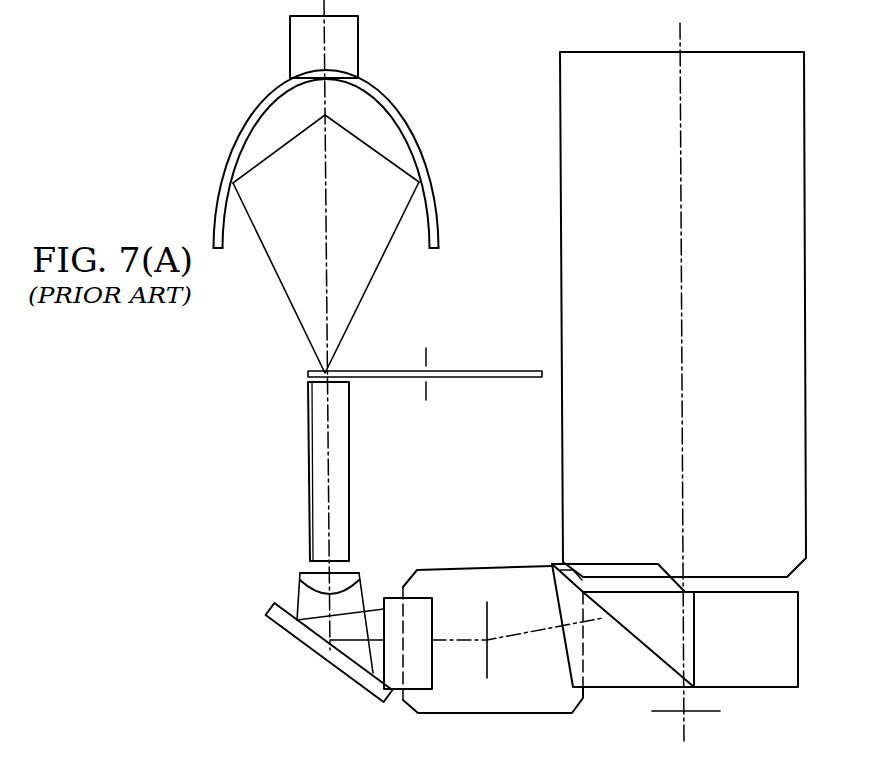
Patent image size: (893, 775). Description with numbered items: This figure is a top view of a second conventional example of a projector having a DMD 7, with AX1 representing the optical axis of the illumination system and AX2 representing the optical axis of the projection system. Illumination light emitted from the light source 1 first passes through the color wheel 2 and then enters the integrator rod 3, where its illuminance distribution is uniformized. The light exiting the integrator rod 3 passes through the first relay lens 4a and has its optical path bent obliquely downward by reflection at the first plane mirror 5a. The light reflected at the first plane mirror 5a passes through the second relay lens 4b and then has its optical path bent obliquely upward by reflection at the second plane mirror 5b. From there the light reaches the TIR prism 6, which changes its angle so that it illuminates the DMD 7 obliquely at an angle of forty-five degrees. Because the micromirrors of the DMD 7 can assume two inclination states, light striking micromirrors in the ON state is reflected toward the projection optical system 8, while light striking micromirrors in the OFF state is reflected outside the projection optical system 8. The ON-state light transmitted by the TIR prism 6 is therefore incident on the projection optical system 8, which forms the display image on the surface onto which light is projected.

The light source 1 is at (230, 152).
The color wheel 2 is at (490, 370).
The integrator rod 3 is at (308, 432).
The first relay lens 4a is at (300, 575).
The second relay lens 4b is at (392, 597).
The first plane mirror 5a is at (297, 642).
The second plane mirror 5b is at (467, 568).
The TIR prism 6 is at (765, 688).
The DMD 7 is at (703, 712).
The projection optical system 8 is at (562, 460).
The optical axis of the illumination system AX1 is at (328, 495).
The optical axis of the projection system AX2 is at (683, 382).